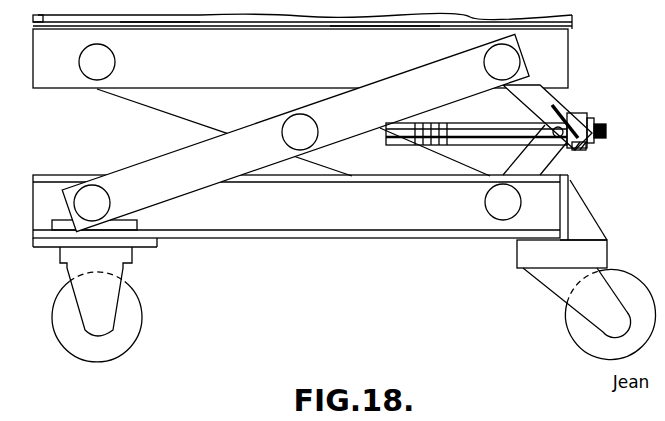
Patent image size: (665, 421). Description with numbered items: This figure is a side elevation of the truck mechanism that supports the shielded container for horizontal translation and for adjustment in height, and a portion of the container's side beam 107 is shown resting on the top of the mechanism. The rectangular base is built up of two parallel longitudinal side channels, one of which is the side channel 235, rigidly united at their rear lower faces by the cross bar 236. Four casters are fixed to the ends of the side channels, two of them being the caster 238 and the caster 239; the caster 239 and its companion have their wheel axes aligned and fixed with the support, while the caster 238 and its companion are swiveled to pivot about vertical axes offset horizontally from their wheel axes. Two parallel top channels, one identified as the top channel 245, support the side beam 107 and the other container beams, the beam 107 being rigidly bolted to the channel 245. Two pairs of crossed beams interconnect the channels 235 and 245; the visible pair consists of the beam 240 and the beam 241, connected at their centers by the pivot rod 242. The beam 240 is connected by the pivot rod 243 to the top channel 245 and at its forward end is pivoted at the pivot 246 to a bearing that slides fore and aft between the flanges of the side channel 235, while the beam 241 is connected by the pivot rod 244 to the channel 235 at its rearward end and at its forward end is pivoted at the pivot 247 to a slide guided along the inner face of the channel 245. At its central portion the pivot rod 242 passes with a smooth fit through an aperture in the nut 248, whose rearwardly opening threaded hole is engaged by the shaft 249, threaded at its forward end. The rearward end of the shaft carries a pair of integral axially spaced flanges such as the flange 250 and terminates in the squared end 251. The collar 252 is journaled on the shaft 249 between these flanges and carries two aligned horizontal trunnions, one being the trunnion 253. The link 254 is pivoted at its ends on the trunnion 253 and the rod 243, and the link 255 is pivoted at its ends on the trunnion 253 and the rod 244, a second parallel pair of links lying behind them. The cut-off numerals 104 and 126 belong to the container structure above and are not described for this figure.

The top platform 104 is at (372, 4).
The side beam 107 is at (468, 17).
The platform frame 126 is at (160, 11).
The side channel 235 is at (345, 218).
The cross bar 236 is at (565, 210).
The caster 238 is at (557, 291).
The caster 239 is at (128, 280).
The beam 240 is at (405, 77).
The beam 241 is at (195, 116).
The pivot rod 242 is at (287, 137).
The pivot rod 243 is at (512, 62).
The pivot rod 244 is at (485, 200).
The top channel 245 is at (330, 72).
The pivot 246 is at (87, 195).
The pivot 247 is at (112, 62).
The nut 248 is at (402, 124).
The shaft 249 is at (460, 138).
The flange 250 is at (590, 123).
The squared end 251 is at (603, 133).
The collar 252 is at (570, 113).
The trunnion 253 is at (586, 144).
The link 254 is at (523, 102).
The link 255 is at (537, 162).